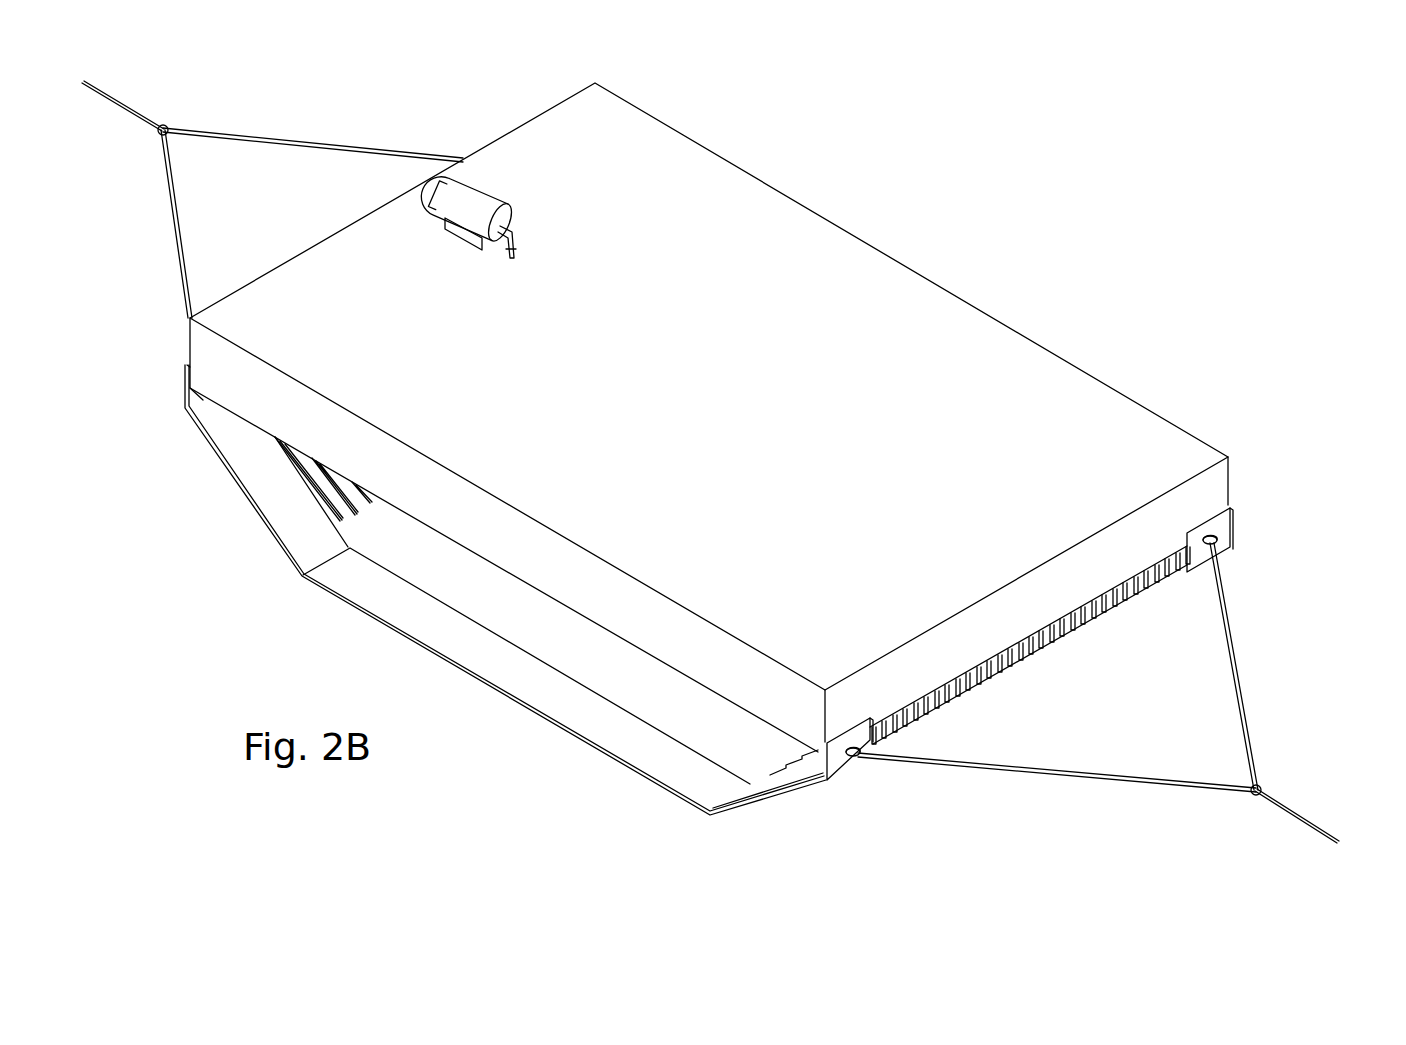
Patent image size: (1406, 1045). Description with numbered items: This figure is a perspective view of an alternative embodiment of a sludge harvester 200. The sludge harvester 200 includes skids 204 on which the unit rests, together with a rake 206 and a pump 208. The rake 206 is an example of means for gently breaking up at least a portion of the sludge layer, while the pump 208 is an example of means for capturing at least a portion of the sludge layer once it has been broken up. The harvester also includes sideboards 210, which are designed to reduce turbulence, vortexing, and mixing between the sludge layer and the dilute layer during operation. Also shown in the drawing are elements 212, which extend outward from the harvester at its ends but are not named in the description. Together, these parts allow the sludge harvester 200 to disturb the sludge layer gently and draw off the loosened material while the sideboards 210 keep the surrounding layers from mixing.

The sludge harvester 200 is at (998, 187).
The skids 204 is at (457, 640).
The rake 206 is at (370, 504).
The pump 208 is at (475, 193).
The sideboards 210 is at (913, 662).
The suspension cables 212 is at (114, 101).